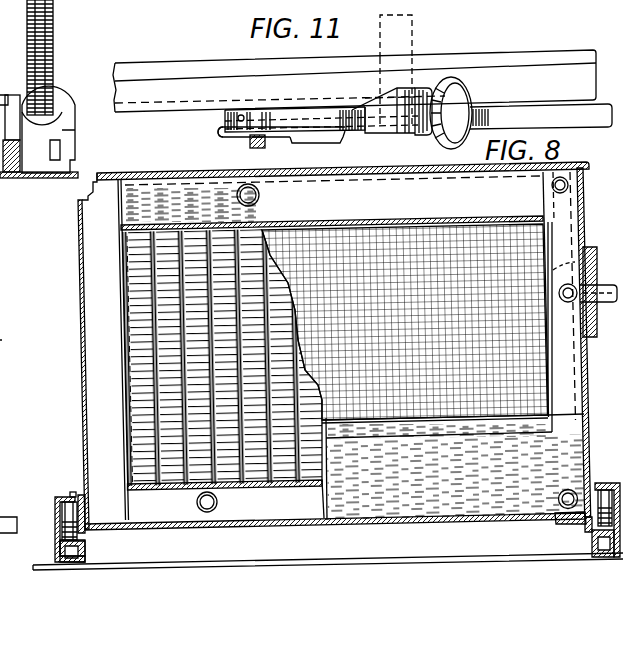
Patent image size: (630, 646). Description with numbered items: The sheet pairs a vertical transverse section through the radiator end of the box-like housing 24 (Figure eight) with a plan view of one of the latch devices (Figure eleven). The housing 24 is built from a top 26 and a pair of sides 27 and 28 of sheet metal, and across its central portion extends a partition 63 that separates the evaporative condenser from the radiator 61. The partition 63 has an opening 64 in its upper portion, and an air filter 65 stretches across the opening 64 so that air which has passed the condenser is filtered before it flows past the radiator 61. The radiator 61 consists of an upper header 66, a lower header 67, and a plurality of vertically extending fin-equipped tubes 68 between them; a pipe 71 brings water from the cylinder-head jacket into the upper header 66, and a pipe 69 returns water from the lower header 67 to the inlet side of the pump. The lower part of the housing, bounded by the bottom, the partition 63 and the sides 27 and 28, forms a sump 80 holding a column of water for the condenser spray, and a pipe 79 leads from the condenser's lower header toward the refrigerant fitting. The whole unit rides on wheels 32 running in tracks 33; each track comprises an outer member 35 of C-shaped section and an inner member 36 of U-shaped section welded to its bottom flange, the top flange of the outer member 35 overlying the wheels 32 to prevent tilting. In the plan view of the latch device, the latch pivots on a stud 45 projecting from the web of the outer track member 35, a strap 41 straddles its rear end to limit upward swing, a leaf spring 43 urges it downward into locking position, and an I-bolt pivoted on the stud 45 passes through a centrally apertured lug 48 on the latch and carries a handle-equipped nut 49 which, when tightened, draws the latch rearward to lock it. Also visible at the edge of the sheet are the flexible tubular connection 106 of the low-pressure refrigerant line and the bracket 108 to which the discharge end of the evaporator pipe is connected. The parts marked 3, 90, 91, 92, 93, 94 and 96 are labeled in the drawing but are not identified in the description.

In FIG. 11, the housing 3 is at (411, 70).
In FIG. 8, the box-like housing 24 is at (78, 272).
In FIG. 8, the top 26 is at (190, 177).
In FIG. 8, the side 27 is at (82, 374).
In FIG. 8, the side 28 is at (586, 418).
In FIG. 8, the wheels 32 is at (70, 494).
In FIG. 11, the tracks 33 is at (172, 104).
In FIG. 8, the tracks 33 is at (59, 497).
In FIG. 8, the outer members 35 is at (57, 543).
In FIG. 11, the inner members 36 is at (171, 77).
In FIG. 8, the inner members 36 is at (86, 547).
In FIG. 11, the strap 41 is at (317, 137).
In FIG. 11, the leaf spring 43 is at (403, 110).
In FIG. 11, the studs 45 is at (263, 148).
In FIG. 11, the centrally apertured lugs 48 is at (440, 93).
In FIG. 11, the handle equipped nuts 49 is at (460, 100).
In FIG. 8, the radiator 61 is at (118, 404).
In FIG. 8, the partition 63 is at (566, 372).
In FIG. 8, the opening 64 is at (443, 421).
In FIG. 8, the air filter 65 is at (505, 395).
In FIG. 8, the upper header 66 is at (335, 294).
In FIG. 8, the lower header 67 is at (250, 500).
In FIG. 8, the fin-equipped tubes 68 is at (163, 311).
In FIG. 8, the pipe 69 is at (200, 521).
In FIG. 8, the pipe 71 is at (262, 197).
In FIG. 11, the pipe 79 is at (15, 72).
In FIG. 8, the sump 80 is at (403, 498).
In FIG. 11, the collar 90 is at (393, 122).
In FIG. 11, the slide body 91 is at (323, 138).
In FIG. 11, the rod 92 is at (473, 118).
In FIG. 11, the stop sleeve 93 is at (352, 130).
In FIG. 8, the panel 94 is at (9, 355).
In FIG. 8, the base member 96 is at (9, 539).
In FIG. 11, the flexible tubular connection 106 is at (55, 50).
In FIG. 11, the bracket 108 is at (66, 128).